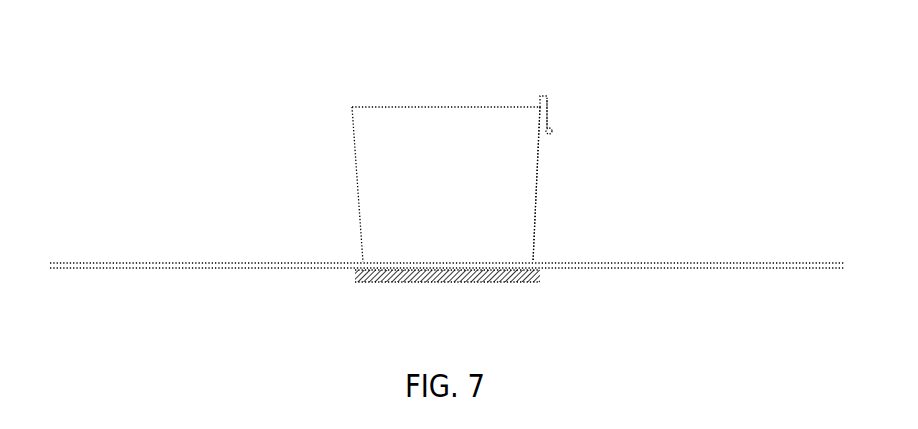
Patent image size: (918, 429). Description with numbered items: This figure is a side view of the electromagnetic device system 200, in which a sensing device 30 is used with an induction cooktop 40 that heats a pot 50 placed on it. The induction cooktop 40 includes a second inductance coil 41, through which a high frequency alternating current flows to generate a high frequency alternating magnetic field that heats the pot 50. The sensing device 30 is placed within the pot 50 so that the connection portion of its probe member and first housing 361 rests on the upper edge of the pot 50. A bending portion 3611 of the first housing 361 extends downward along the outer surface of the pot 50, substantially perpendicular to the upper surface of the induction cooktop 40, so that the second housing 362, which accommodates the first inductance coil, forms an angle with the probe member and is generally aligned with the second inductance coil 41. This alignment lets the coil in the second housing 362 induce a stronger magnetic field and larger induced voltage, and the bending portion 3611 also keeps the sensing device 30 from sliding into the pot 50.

The electromagnetic device system 200 is at (766, 50).
The sensing device 30 is at (548, 89).
The pot 50 is at (537, 192).
The first housing 361 is at (547, 96).
The bending portion 3611 is at (549, 110).
The second housing 362 is at (552, 134).
The induction cooktop 40 is at (645, 263).
The second inductance coil 41 is at (540, 281).